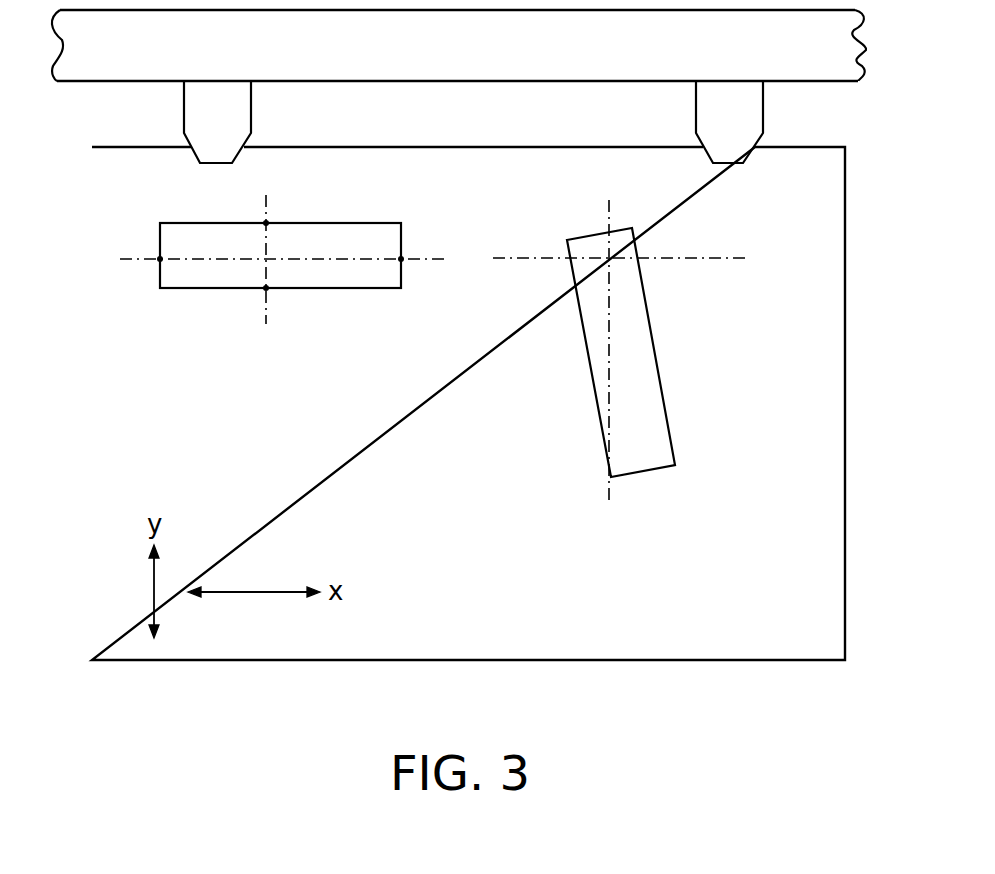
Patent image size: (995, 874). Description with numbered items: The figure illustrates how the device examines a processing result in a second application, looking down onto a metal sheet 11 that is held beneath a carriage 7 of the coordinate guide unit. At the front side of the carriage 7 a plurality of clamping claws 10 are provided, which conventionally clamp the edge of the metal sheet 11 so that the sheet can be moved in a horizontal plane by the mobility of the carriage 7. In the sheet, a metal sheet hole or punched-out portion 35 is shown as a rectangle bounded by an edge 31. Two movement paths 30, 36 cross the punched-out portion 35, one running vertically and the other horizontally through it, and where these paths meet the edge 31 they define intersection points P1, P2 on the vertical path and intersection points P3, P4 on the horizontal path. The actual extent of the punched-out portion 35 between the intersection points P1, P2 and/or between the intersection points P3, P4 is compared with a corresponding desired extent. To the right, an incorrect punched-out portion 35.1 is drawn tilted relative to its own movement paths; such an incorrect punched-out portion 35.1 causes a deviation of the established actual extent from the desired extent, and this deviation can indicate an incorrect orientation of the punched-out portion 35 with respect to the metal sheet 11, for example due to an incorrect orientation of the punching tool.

The carriage 7 is at (486, 58).
The clamping claws 10 is at (235, 127).
The metal sheet 11 is at (811, 617).
The movement path 30 is at (267, 238).
The edge 31 is at (373, 223).
The punched-out portion 35 is at (285, 298).
The incorrect punched-out portion 35.1 is at (658, 342).
The movement path 36 is at (292, 262).
The intersection point P1 is at (247, 307).
The intersection point P2 is at (247, 206).
The intersection point P3 is at (420, 277).
The intersection point P4 is at (138, 277).